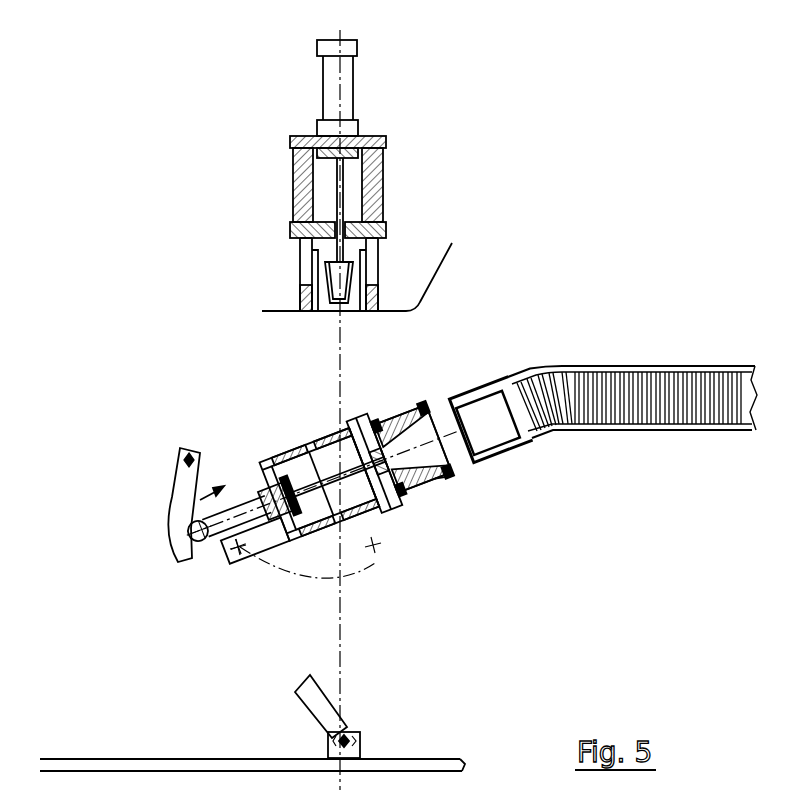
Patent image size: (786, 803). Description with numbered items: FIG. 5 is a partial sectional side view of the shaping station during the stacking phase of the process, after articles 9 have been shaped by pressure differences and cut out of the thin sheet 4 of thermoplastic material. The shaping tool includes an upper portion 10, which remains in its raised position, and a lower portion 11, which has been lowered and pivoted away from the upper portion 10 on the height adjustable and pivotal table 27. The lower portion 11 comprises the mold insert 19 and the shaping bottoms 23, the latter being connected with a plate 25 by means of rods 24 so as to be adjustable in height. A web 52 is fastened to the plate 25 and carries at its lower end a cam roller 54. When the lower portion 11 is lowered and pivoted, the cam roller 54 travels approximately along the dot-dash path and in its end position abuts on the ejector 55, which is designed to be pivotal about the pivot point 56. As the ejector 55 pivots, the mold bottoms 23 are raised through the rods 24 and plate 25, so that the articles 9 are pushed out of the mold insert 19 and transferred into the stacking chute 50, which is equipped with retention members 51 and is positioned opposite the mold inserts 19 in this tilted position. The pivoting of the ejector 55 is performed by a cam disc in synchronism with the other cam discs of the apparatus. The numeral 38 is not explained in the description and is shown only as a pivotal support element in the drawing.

The thin sheet 4 is at (274, 313).
The article 9 is at (473, 433).
The upper portion 10 is at (297, 175).
The lower portion 11 is at (437, 493).
The mold insert 19 is at (413, 406).
The shaping bottom 23 is at (386, 422).
The rod 24 is at (372, 513).
The plate 25 is at (280, 530).
The table 27 is at (352, 425).
The pivot arm 38 is at (325, 713).
The stacking chute 50 is at (612, 435).
The retention member 51 is at (517, 443).
The web 52 is at (217, 530).
The cam roller 54 is at (190, 535).
The ejector 55 is at (180, 510).
The pivot point 56 is at (183, 460).